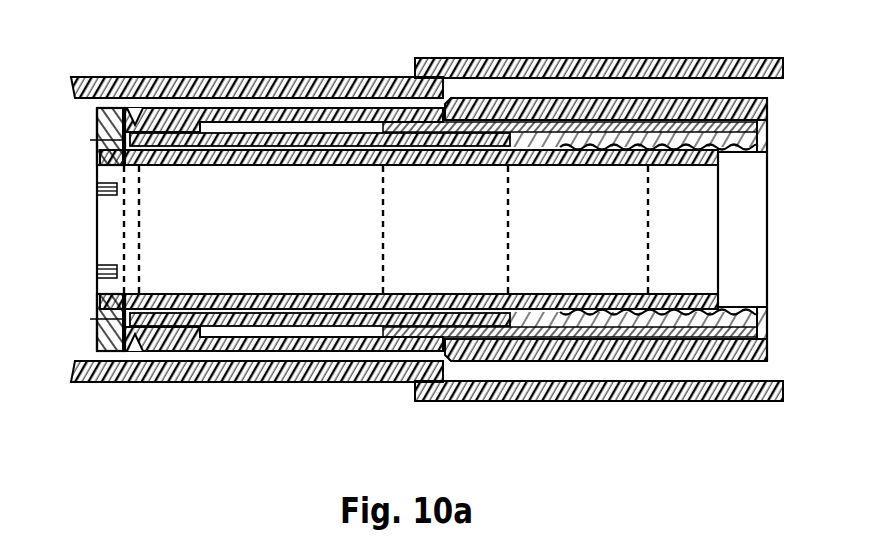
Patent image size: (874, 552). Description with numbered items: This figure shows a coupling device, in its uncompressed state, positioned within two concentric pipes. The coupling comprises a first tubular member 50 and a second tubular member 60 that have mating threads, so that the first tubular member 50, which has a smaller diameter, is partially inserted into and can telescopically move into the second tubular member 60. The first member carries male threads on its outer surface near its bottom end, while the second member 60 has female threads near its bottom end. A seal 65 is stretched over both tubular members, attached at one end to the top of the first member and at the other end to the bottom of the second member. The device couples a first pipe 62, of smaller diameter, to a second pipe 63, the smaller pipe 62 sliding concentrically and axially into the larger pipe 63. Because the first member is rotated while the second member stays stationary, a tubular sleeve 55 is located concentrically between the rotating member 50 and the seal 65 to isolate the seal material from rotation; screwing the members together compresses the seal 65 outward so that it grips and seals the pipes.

The first tubular member 50 is at (105, 342).
The tubular sleeve 55 is at (97, 140).
The second tubular member 60 is at (760, 340).
The first pipe 62 is at (192, 77).
The second pipe 63 is at (655, 60).
The seal 65 is at (483, 107).